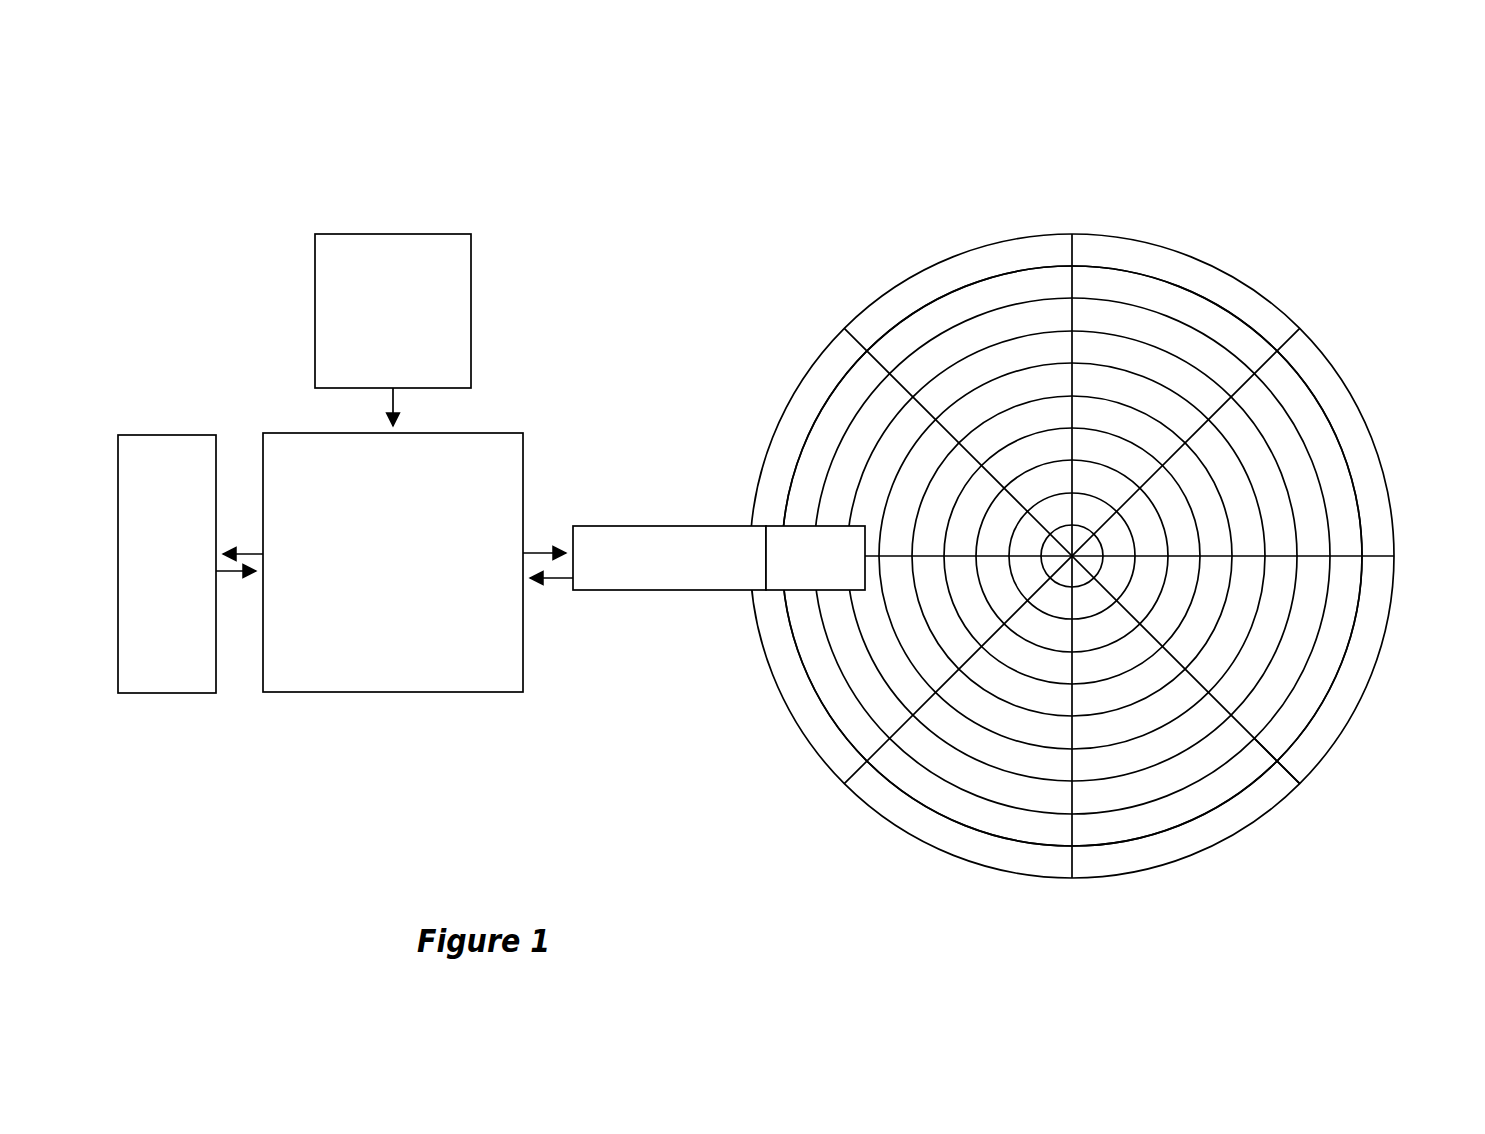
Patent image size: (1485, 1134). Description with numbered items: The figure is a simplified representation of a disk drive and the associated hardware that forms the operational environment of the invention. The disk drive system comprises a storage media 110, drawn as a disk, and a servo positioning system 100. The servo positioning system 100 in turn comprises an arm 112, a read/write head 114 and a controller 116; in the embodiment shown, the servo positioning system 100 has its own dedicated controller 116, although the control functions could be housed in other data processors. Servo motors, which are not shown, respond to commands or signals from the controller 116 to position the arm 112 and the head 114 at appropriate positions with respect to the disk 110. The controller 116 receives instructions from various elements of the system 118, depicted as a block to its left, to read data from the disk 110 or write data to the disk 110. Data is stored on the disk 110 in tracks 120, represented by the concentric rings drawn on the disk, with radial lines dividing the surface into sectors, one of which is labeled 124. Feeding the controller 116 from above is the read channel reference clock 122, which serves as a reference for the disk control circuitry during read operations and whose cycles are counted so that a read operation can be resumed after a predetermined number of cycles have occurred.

The servo positioning system 100 is at (506, 295).
The storage media 110 is at (1226, 287).
The arm 112 is at (626, 542).
The read/write head 114 is at (783, 575).
The controller 116 is at (413, 657).
The system 118 is at (169, 460).
The tracks 120 is at (1338, 398).
The read channel reference clock 122 is at (391, 253).
The servo sector 124 is at (1272, 750).